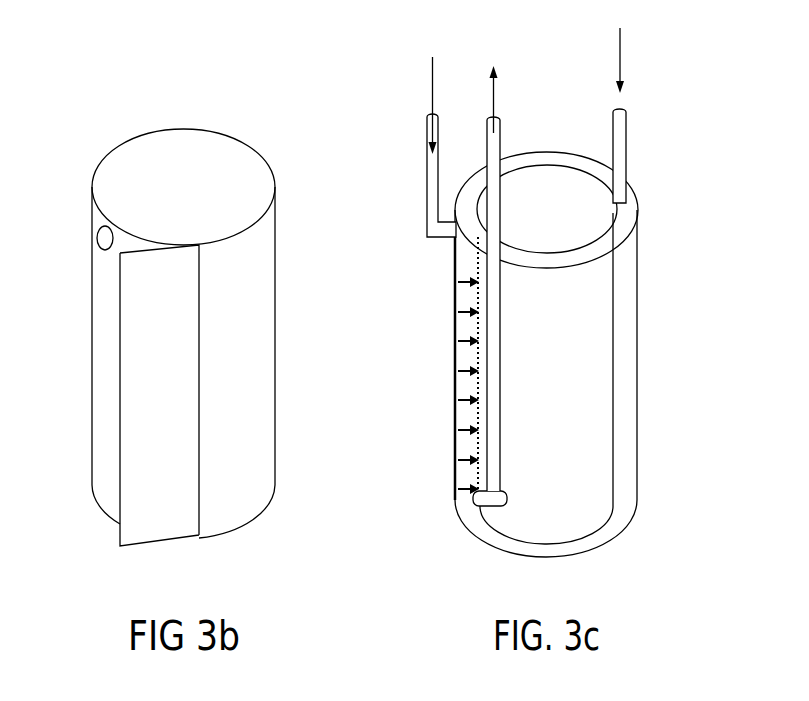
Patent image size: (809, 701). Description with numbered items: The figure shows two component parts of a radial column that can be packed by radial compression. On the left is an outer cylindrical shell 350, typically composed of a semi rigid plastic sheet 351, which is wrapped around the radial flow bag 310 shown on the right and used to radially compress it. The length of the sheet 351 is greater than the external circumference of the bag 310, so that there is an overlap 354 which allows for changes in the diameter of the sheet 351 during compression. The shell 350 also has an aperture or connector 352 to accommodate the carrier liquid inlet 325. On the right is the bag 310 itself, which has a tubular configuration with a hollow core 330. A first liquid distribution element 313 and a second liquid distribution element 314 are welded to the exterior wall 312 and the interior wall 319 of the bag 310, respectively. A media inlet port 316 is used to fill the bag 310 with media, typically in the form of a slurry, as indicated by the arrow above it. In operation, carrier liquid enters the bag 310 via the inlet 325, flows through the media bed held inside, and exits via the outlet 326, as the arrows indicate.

In FIG. 3b, the outer cylindrical shell 350 is at (153, 126).
In FIG. 3b, the semi rigid plastic sheet 351 is at (257, 277).
In FIG. 3b, the aperture or connector 352 is at (100, 242).
In FIG. 3b, the overlap 354 is at (138, 453).
In FIG. 3c, the bag 310 is at (660, 298).
In FIG. 3c, the exterior wall 312 is at (637, 420).
In FIG. 3c, the interior wall 319 is at (615, 357).
In FIG. 3c, the first liquid distribution element 313 is at (452, 443).
In FIG. 3c, the second liquid distribution element 314 is at (478, 258).
In FIG. 3c, the media inlet port 316 is at (627, 170).
In FIG. 3c, the carrier liquid inlet 325 is at (424, 164).
In FIG. 3c, the outlet 326 is at (501, 134).
In FIG. 3c, the hollow core 330 is at (548, 193).